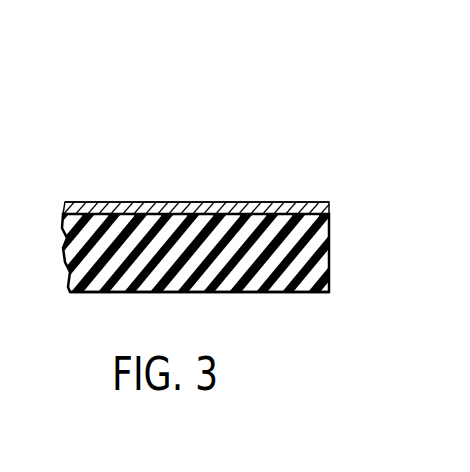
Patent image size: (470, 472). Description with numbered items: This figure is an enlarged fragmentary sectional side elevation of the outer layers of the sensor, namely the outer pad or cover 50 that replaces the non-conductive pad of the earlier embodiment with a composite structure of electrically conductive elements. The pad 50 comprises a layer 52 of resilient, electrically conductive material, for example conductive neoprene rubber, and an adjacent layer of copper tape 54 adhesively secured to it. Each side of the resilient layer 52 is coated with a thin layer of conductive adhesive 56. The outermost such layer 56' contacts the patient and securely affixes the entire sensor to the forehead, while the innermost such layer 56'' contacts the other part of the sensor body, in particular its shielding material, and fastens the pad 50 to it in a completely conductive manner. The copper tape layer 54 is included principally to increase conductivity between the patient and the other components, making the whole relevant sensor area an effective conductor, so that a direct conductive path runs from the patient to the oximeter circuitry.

The outer pad or cover 50 is at (220, 150).
The layer of resilient material 52 is at (320, 267).
The copper tape layer 54 is at (336, 206).
The conductive adhesive layer 56 is at (247, 234).
The outermost conductive adhesive layer 56' is at (197, 147).
The innermost conductive adhesive layer 56'' is at (199, 364).